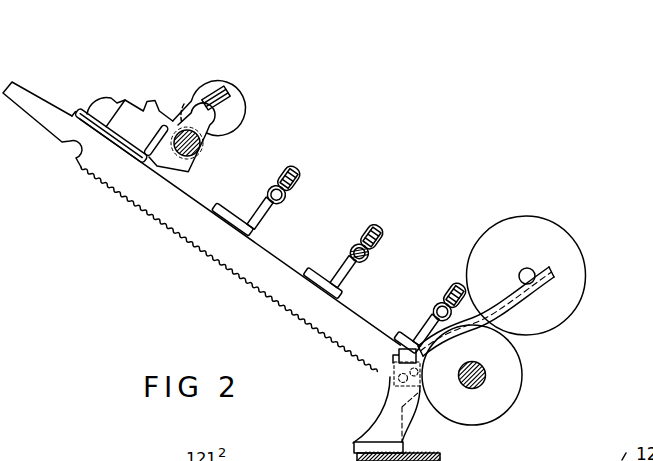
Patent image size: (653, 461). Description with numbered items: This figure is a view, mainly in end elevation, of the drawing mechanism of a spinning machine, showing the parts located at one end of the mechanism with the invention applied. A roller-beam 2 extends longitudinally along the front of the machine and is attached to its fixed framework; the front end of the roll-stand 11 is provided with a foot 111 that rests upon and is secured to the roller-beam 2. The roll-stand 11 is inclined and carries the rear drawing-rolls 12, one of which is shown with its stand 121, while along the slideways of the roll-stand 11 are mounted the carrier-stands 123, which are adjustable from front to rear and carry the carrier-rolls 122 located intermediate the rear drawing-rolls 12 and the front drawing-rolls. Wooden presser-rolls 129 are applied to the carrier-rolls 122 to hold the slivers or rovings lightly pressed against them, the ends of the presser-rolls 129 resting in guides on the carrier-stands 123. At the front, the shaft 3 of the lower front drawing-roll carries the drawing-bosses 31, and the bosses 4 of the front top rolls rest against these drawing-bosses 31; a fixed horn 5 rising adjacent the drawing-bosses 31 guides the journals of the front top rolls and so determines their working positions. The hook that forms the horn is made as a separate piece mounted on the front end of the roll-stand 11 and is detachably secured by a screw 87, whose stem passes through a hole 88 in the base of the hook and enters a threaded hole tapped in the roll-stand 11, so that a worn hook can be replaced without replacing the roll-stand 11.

The roller-beam 2 is at (441, 457).
The shaft of the lower front drawing-roll 3 is at (486, 377).
The bosses of the front top rolls 4 is at (586, 275).
The horn 5 is at (522, 291).
The roll-stand 11 is at (287, 299).
The rear drawing-rolls 12 is at (246, 106).
The drawing-bosses of the lower front drawing-roll 31 is at (521, 391).
The screw 87 is at (392, 355).
The hole 88 is at (390, 375).
The feet 111 is at (388, 413).
The stand for the rear drawing-rolls 121 is at (132, 133).
The carrier-rolls 122 is at (270, 189).
The carrier-stands 123 is at (258, 230).
The presser-rolls 129 is at (302, 167).